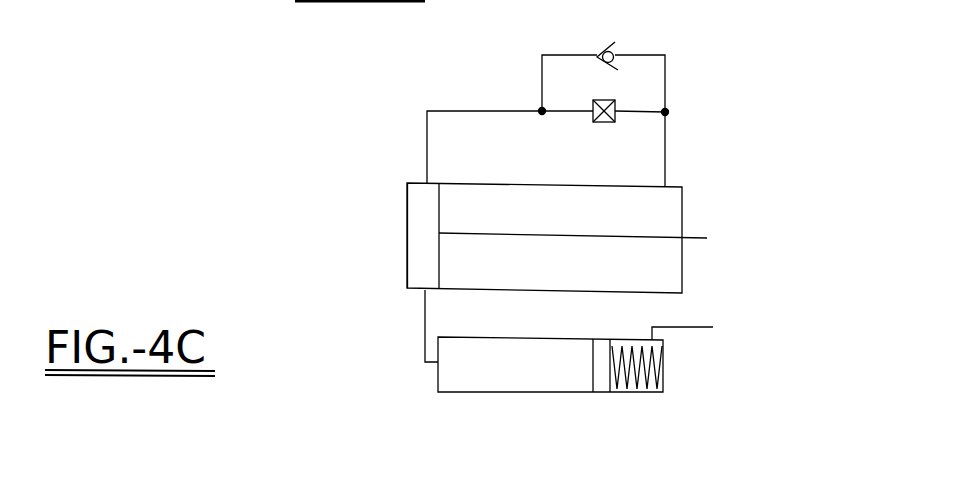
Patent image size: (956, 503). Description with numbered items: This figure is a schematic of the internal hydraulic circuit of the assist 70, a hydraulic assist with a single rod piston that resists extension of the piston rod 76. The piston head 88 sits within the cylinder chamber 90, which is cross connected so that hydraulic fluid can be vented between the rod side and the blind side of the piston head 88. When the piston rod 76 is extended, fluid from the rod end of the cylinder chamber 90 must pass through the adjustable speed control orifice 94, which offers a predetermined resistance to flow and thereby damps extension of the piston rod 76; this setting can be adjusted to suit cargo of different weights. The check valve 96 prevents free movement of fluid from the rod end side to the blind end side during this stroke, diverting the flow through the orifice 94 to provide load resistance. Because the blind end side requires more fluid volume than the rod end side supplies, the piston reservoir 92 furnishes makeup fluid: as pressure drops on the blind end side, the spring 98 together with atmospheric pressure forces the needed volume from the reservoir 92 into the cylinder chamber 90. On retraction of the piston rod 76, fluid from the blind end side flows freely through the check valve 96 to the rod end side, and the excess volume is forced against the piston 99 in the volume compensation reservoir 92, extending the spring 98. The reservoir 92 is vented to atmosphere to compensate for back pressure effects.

The assist 70 is at (393, 120).
The piston rod 76 is at (707, 238).
The piston head 88 is at (415, 228).
The cylinder chamber 90 is at (655, 270).
The piston reservoir 92 is at (518, 350).
The adjustable speed control orifice 94 is at (613, 52).
The check valve 96 is at (597, 122).
The spring 98 is at (653, 387).
The piston 99 is at (602, 338).